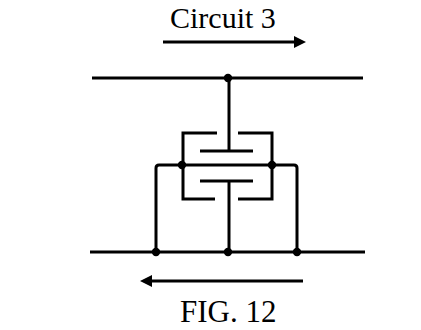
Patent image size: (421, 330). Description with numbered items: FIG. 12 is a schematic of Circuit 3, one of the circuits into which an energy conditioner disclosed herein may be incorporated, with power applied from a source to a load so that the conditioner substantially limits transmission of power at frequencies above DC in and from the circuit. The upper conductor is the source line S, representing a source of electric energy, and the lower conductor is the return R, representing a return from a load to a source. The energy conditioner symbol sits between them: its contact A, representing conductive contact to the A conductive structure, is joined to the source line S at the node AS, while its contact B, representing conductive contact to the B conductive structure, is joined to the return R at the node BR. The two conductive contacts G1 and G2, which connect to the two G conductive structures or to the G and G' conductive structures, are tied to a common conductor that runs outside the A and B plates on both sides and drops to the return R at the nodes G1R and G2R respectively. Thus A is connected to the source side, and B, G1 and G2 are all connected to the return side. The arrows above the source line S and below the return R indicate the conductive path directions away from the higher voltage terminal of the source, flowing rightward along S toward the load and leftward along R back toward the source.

The source S is at (123, 77).
The node connecting A to source line S AS is at (230, 76).
The A conductive structure contact A is at (227, 121).
The B conductive structure contact B is at (227, 208).
The G conductive contact G1 is at (160, 164).
The G conductive contact G2 is at (279, 164).
The return R is at (96, 252).
The node connecting G1 to return R G1R is at (153, 255).
The node connecting B to return R BR is at (228, 254).
The node connecting G2 to return R G2R is at (298, 250).